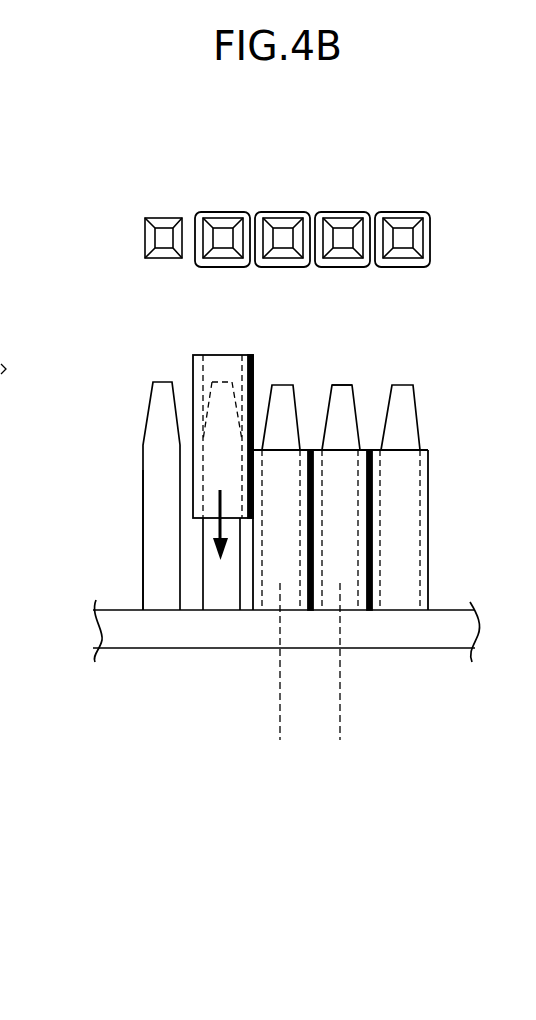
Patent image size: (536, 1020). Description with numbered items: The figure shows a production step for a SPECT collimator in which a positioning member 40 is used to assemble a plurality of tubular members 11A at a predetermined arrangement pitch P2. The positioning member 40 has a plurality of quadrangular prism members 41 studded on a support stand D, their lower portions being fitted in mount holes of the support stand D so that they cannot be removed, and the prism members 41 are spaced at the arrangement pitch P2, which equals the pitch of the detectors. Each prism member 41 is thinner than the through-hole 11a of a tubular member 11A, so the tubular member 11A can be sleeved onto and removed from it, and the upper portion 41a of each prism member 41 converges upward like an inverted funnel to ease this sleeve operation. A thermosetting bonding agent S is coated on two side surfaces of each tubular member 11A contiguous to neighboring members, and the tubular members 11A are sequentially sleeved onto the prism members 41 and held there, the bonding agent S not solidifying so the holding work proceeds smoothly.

The positioning member 40 is at (139, 525).
The prism member 41 is at (164, 218).
The upper portion 41a is at (345, 404).
The tubular member 11A is at (289, 209).
The through-hole 11a is at (205, 368).
The bonding agent S is at (253, 366).
The support stand D is at (158, 630).
The arrangement pitch P2 is at (338, 730).